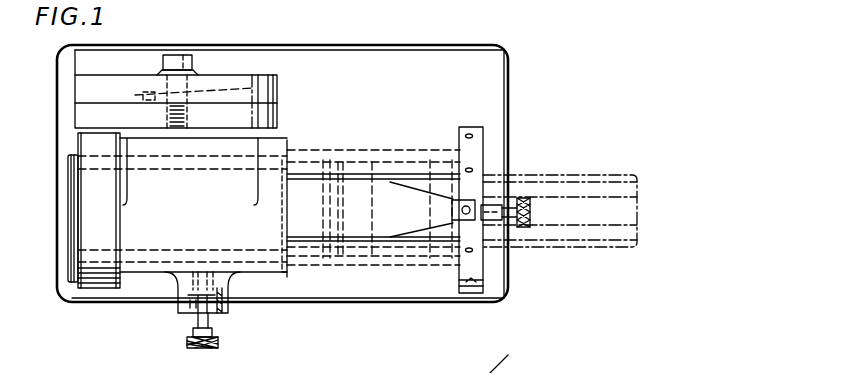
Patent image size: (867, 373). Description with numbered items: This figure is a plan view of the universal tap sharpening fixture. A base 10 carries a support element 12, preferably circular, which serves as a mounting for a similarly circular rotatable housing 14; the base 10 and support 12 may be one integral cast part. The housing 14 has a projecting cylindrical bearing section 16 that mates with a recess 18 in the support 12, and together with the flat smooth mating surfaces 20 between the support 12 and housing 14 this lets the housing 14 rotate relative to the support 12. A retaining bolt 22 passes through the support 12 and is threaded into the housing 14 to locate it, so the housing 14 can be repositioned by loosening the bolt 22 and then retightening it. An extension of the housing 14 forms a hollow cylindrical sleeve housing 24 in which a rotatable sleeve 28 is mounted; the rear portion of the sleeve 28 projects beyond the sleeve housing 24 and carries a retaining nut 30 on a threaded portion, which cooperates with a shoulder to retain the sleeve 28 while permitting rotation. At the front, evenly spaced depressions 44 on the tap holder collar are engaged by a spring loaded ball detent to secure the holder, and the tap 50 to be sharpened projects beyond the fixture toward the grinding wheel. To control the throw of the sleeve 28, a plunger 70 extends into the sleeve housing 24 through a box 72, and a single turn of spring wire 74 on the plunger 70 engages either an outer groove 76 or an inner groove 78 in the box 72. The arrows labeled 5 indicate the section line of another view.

The base 10 is at (453, 55).
The support element 12 is at (232, 80).
The rotatable housing 14 is at (273, 113).
The cylindrical bearing section 16 is at (258, 88).
The recess 18 is at (176, 98).
The mating surfaces 20 is at (100, 100).
The retaining bolt 22 is at (182, 57).
The sleeve housing 24 is at (273, 193).
The rotatable sleeve 28 is at (383, 157).
The retaining nut 30 is at (95, 277).
The depressions 44 is at (470, 133).
The tap 50 is at (620, 175).
The plunger 70 is at (183, 310).
The box 72 is at (230, 317).
The spring wire 74 is at (227, 308).
The outer groove 76 is at (178, 308).
The inner groove 78 is at (182, 303).
The section line 5- 5 is at (103, 208).